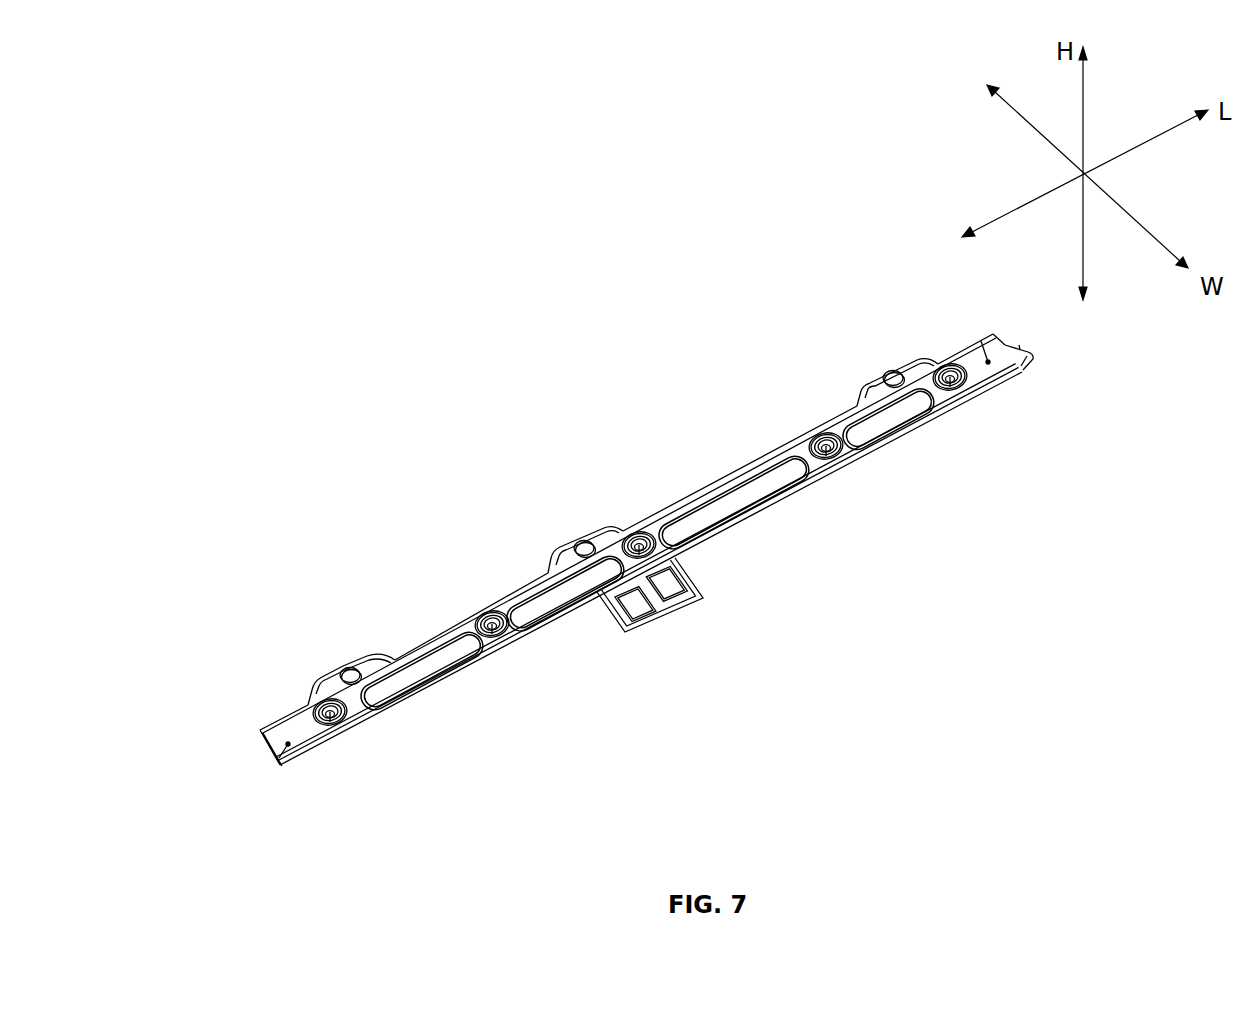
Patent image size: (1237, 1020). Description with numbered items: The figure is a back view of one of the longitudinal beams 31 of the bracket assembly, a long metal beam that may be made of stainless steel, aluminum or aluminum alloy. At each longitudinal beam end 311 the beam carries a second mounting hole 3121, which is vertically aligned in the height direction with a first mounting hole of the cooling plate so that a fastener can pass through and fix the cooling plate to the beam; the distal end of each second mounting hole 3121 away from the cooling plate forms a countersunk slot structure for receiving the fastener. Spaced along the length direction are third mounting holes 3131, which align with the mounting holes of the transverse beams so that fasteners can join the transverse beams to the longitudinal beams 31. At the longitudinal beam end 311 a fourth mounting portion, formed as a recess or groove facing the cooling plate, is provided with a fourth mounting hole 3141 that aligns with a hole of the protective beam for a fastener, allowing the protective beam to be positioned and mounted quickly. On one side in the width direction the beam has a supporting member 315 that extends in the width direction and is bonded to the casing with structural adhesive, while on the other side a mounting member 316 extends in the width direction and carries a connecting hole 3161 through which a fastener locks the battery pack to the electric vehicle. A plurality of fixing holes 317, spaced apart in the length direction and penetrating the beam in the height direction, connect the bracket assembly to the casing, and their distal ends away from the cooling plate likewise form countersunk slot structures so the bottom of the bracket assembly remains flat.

The longitudinal beam 31 is at (473, 310).
The longitudinal beam end 311 is at (1036, 357).
The supporting member 315 is at (1000, 342).
The mounting member 316 is at (860, 393).
The connecting hole 3161 is at (896, 370).
The fixing hole 317 is at (950, 395).
The second mounting hole 3121 is at (955, 384).
The third mounting hole 3131 is at (672, 527).
The fourth mounting hole 3141 is at (288, 762).